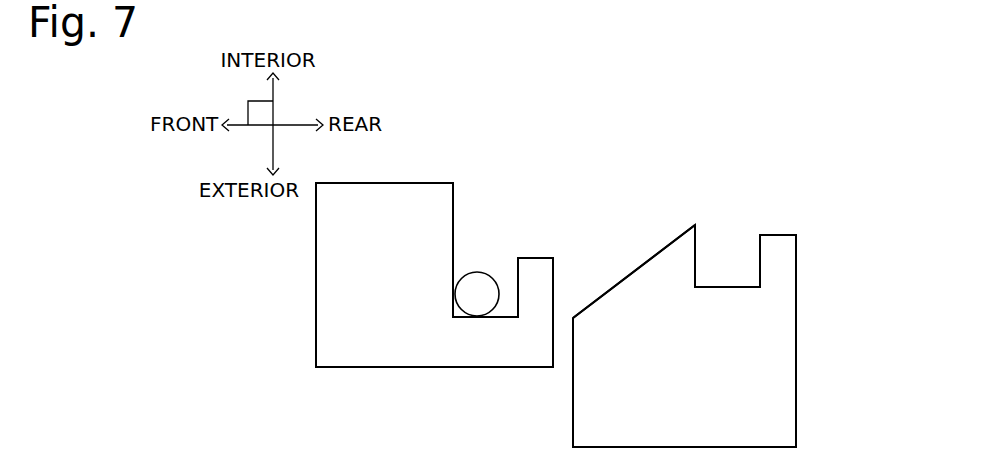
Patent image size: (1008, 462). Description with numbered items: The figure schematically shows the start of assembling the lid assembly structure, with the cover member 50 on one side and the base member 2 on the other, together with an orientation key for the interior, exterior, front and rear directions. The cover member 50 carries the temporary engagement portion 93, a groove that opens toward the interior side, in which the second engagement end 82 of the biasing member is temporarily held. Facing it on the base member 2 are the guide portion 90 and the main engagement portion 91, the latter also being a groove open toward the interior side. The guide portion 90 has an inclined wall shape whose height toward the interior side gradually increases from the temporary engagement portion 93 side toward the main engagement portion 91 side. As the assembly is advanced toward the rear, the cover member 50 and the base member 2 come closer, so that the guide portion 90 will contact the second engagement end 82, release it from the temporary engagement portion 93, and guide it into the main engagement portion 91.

The base member 2 is at (798, 398).
The cover member 50 is at (307, 265).
The second engagement end 82 is at (478, 288).
The guide portion 90 is at (632, 272).
The main engagement portion 91 is at (792, 260).
The temporary engagement portion 93 is at (495, 357).